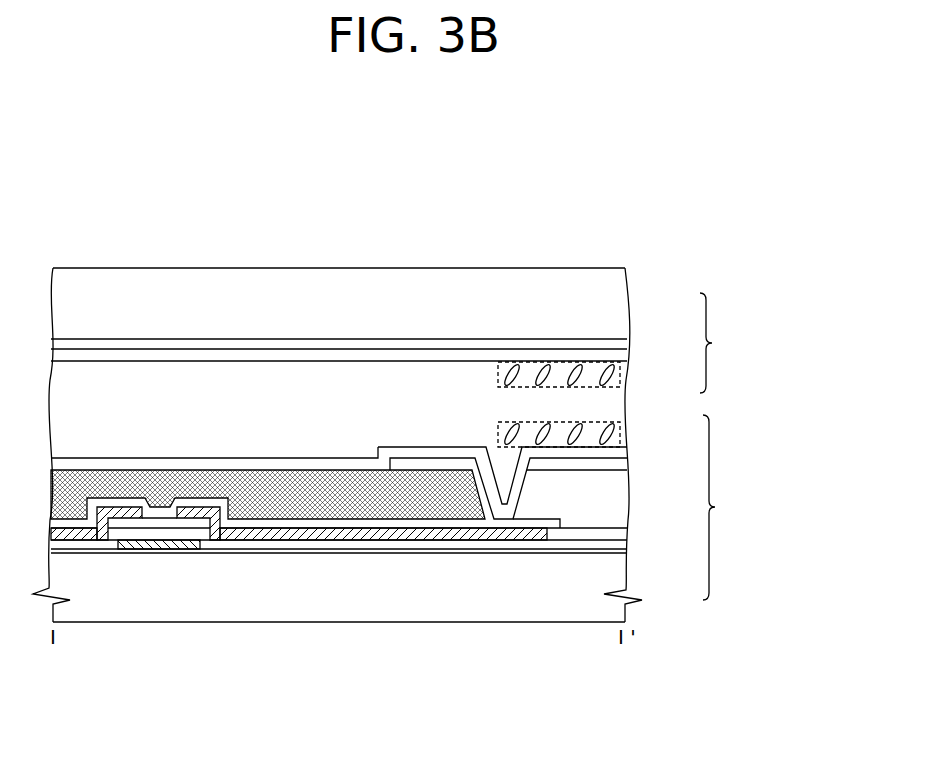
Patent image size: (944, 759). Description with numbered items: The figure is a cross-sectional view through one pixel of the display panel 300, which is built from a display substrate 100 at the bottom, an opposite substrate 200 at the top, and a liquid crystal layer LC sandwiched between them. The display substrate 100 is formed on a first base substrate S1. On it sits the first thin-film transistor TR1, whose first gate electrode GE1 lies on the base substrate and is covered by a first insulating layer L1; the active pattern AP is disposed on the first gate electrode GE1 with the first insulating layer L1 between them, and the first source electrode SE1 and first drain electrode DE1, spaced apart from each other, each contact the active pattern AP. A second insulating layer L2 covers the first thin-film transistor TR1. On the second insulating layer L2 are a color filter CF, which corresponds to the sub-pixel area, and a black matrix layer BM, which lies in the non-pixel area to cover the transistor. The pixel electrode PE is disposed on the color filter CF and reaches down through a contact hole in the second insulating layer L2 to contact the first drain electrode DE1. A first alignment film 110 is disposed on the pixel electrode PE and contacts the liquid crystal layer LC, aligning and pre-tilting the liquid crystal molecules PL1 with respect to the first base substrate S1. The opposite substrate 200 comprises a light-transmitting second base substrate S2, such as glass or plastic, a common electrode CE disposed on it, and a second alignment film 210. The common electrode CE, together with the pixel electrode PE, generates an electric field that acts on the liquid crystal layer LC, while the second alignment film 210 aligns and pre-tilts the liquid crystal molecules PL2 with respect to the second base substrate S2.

The display panel 300 is at (510, 243).
The second base substrate S2 is at (610, 308).
The common electrode CE is at (612, 345).
The second alignment film 210 is at (612, 362).
The opposite substrate 200 is at (725, 343).
The liquid crystal molecules PL2 is at (498, 374).
The liquid crystal layer LC is at (610, 404).
The liquid crystal molecules PL1 is at (498, 432).
The first alignment film 110 is at (623, 448).
The pixel electrode PE is at (623, 458).
The color filter CF is at (610, 492).
The black matrix layer BM is at (337, 507).
The display substrate 100 is at (730, 507).
The second insulating layer L2 is at (608, 535).
The first insulating layer L1 is at (608, 547).
The first base substrate S1 is at (608, 583).
The first thin-film transistor TR1 is at (154, 613).
The first source electrode SE1 is at (90, 537).
The first gate electrode GE1 is at (135, 546).
The active pattern AP is at (180, 521).
The first drain electrode DE1 is at (209, 593).